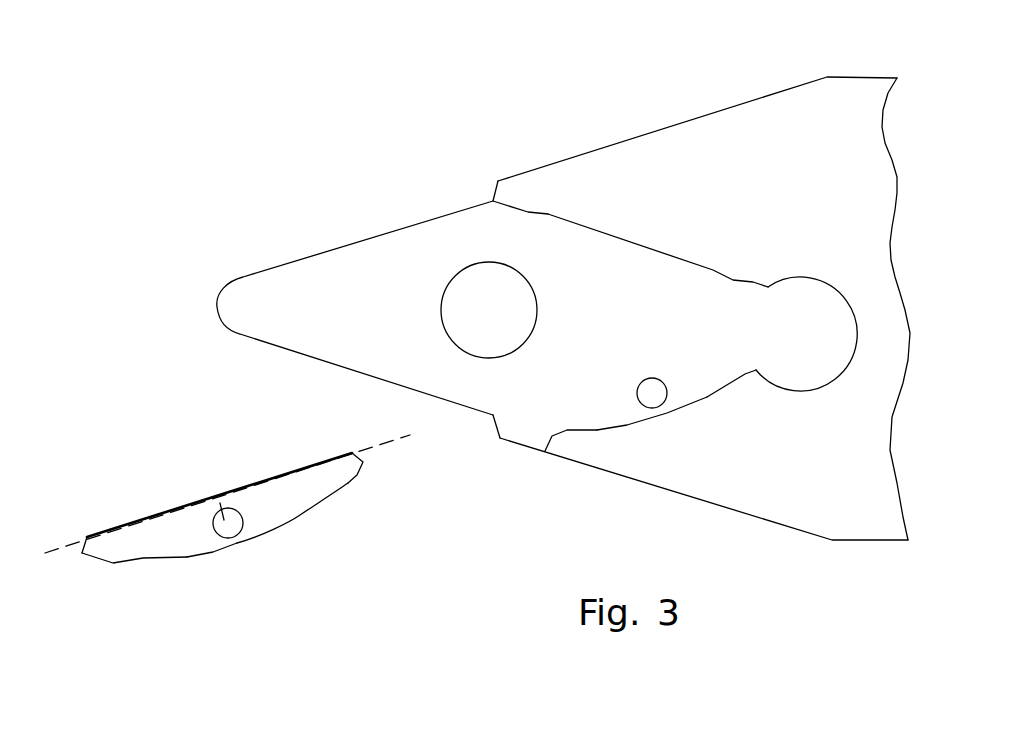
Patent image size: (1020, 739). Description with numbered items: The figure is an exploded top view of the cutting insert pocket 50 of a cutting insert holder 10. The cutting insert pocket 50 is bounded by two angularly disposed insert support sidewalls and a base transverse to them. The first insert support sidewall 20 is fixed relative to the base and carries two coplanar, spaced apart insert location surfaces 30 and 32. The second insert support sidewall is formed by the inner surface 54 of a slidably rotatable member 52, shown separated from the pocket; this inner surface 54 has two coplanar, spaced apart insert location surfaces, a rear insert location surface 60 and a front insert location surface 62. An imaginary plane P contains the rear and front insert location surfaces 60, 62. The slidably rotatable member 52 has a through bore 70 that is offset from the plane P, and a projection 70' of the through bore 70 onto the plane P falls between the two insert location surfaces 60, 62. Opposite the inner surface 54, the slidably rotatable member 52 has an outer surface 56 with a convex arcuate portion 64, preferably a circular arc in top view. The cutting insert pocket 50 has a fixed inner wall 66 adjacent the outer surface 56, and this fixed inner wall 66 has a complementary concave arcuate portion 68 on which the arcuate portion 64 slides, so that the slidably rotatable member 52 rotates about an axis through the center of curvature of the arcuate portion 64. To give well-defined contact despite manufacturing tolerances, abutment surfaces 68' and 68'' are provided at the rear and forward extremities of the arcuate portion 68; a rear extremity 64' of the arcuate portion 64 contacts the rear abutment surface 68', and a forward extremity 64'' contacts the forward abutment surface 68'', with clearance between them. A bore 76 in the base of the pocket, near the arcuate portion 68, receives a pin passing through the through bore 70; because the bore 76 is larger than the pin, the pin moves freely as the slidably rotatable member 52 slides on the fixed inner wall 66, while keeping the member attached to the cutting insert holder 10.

The cutting insert holder 10 is at (588, 72).
The first insert support sidewall 20 is at (582, 255).
The insert location surface 30 is at (743, 282).
The insert location surface 32 is at (510, 212).
The cutting insert pocket 50 is at (323, 276).
The slidably rotatable member 52 is at (351, 600).
The inner surface 54 is at (200, 467).
The outer surface 56 is at (283, 554).
The rear insert location surface 60 is at (327, 460).
The front insert location surface 62 is at (112, 530).
The arcuate portion 64 is at (234, 583).
The rear extremity 64' is at (314, 534).
The forward extremity 64'' is at (134, 605).
The fixed inner wall 66 is at (611, 374).
The arcuate portion 68 is at (652, 368).
The rear abutment surface 68' is at (724, 349).
The forward abutment surface 68'' is at (558, 401).
The through bore 70 is at (220, 582).
The projection of the through bore 70' is at (317, 504).
The bore 76 is at (650, 398).
The imaginary plane P is at (387, 447).